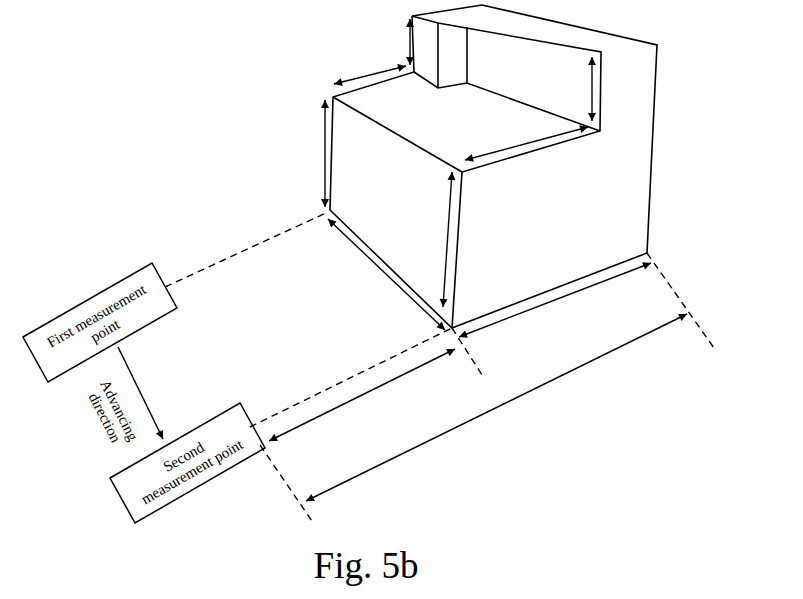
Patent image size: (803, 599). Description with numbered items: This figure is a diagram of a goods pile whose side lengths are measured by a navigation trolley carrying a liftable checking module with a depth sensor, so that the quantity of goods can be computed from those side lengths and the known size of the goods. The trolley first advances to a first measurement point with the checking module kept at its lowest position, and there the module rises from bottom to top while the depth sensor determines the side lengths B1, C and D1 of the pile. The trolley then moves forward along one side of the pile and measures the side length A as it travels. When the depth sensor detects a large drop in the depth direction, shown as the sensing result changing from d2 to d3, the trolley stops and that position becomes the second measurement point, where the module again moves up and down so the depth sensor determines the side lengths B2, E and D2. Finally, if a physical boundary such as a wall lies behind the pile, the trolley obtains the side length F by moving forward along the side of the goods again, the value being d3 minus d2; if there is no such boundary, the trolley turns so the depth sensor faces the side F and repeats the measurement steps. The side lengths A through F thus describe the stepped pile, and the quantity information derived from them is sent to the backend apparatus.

The side length D1 is at (397, 42).
The side length D2 is at (579, 89).
The side length C is at (370, 72).
The side length E is at (526, 143).
The side length B1 is at (312, 153).
The side length B2 is at (438, 239).
The side length A is at (386, 274).
The side length F is at (555, 300).
The depth sensing result d2 is at (362, 395).
The depth sensing result d3 is at (496, 407).